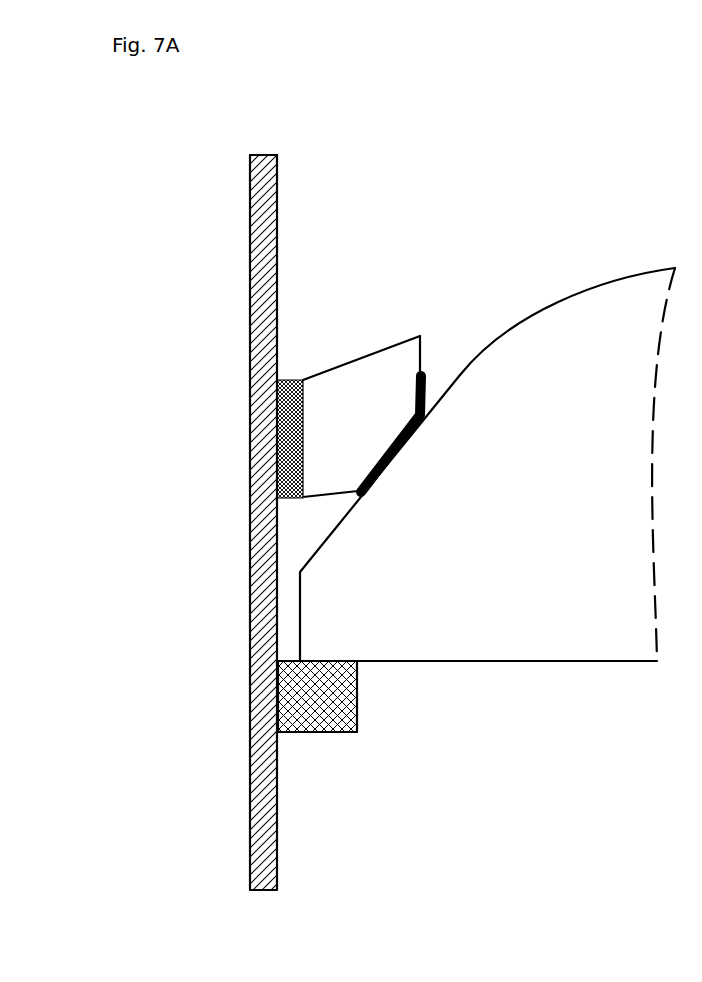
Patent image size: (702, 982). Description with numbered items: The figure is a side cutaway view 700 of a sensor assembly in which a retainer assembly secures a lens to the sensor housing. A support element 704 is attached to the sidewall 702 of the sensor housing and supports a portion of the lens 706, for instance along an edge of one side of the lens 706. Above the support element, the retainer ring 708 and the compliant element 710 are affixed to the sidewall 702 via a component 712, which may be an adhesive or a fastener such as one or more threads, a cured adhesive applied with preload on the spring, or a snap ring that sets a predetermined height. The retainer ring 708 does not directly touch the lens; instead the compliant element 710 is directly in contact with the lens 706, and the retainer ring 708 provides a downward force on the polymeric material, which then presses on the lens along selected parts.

The side cutaway view 700 is at (200, 103).
The sidewall 702 is at (249, 440).
The support element 704 is at (357, 693).
The lens 706 is at (616, 633).
The retainer ring 708 is at (394, 346).
The compliant element 710 is at (440, 372).
The component 712 is at (285, 497).